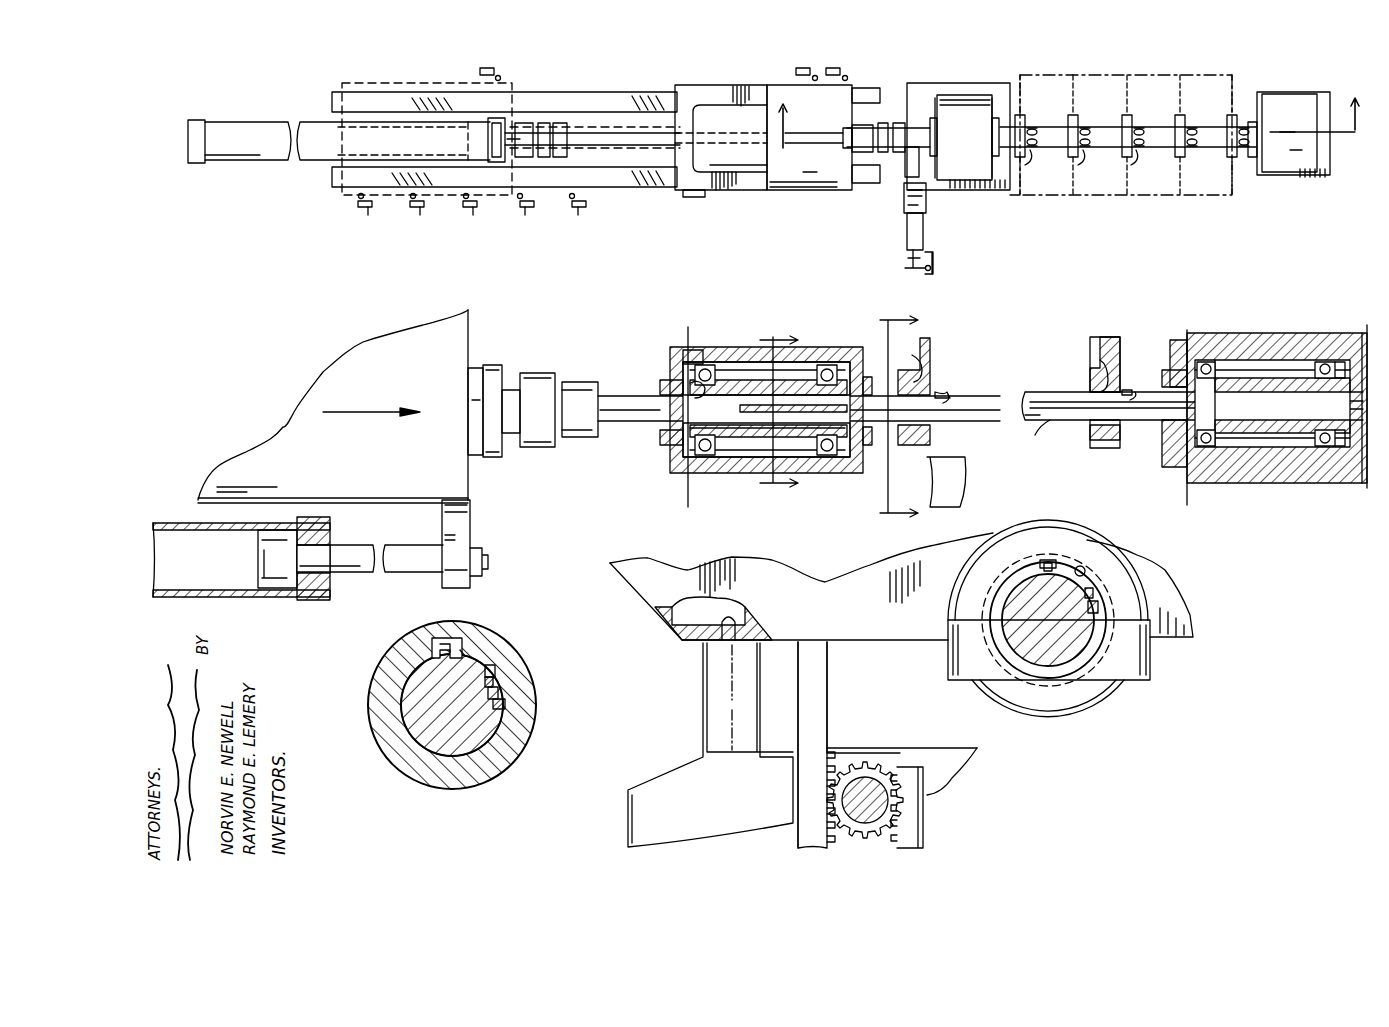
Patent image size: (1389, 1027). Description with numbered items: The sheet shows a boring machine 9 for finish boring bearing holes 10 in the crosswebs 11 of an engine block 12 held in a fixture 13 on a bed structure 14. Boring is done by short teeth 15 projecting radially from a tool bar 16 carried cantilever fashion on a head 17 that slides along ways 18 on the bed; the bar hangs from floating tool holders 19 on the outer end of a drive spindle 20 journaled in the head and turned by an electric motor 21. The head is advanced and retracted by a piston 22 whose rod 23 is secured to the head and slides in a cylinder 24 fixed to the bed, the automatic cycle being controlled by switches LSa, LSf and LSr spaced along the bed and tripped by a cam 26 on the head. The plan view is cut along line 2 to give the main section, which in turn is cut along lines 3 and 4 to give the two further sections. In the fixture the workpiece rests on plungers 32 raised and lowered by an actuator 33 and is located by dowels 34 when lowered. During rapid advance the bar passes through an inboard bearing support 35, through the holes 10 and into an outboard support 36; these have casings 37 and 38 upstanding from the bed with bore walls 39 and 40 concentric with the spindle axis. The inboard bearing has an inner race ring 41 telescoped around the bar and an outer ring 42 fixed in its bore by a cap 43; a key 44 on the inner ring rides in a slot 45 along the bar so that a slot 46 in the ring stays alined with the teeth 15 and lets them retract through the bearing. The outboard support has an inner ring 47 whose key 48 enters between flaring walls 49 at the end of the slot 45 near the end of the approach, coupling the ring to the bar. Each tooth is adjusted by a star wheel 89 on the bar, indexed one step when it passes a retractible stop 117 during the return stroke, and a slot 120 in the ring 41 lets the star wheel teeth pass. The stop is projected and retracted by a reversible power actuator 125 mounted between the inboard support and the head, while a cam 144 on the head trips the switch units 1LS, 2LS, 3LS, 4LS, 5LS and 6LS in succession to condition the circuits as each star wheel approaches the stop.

In FIG. 1, the section line 2— 2 is at (1069, 137).
In FIG. 2, the section line 3— 3 is at (769, 410).
In FIG. 2, the section line 4— 4 is at (885, 418).
In FIG. 1, the boring machine 9 is at (765, 213).
In FIG. 2, the bearing holes 10 is at (933, 365).
In FIG. 4, the bearing holes 10 is at (1080, 575).
In FIG. 1, the crosswebs 11 is at (1070, 115).
In FIG. 2, the crosswebs 11 is at (912, 348).
In FIG. 4, the crosswebs 11 is at (1105, 680).
In FIG. 1, the engine block 12 is at (1123, 70).
In FIG. 2, the engine block 12 is at (1090, 337).
In FIG. 4, the engine block 12 is at (925, 640).
In FIG. 2, the fixture 13 is at (966, 488).
In FIG. 4, the fixture 13 is at (703, 710).
In FIG. 1, the bed structure 14 is at (1022, 195).
In FIG. 1, the cutting teeth 15 is at (1140, 137).
In FIG. 2, the cutting teeth 15 is at (950, 392).
In FIG. 3, the cutting teeth 15 is at (468, 647).
In FIG. 4, the cutting teeth 15 is at (1048, 562).
In FIG. 1, the tool spindle or boring bar 16 is at (607, 130).
In FIG. 2, the tool spindle or boring bar 16 is at (622, 392).
In FIG. 3, the tool spindle or boring bar 16 is at (452, 705).
In FIG. 4, the tool spindle or boring bar 16 is at (1085, 735).
In FIG. 1, the head 17 is at (390, 83).
In FIG. 2, the head 17 is at (330, 375).
In FIG. 1, the ways 18 is at (360, 88).
In FIG. 1, the floating tool holders 19 is at (907, 152).
In FIG. 2, the floating tool holders 19 is at (545, 445).
In FIG. 1, the drive spindle 20 is at (870, 153).
In FIG. 2, the drive spindle 20 is at (505, 455).
In FIG. 1, the electric motor 21 is at (712, 97).
In FIG. 2, the piston 22 is at (277, 529).
In FIG. 1, the piston rod 23 is at (638, 145).
In FIG. 2, the piston rod 23 is at (370, 544).
In FIG. 1, the cylinder 24 is at (257, 128).
In FIG. 2, the cylinder 24 is at (180, 522).
In FIG. 1, the cam 26 is at (505, 85).
In FIG. 4, the plungers 32 is at (826, 707).
In FIG. 4, the actuator 33 is at (875, 752).
In FIG. 4, the dowels 34 is at (732, 620).
In FIG. 1, the inboard bearing support 35 is at (975, 93).
In FIG. 2, the inboard bearing support 35 is at (720, 335).
In FIG. 1, the outboard bearing support 36 is at (1288, 95).
In FIG. 2, the outboard bearing support 36 is at (1218, 328).
In FIG. 2, the inboard casing 37 is at (685, 492).
In FIG. 2, the outboard casing 38 is at (1185, 493).
In FIG. 2, the inboard bore wall 39 is at (837, 450).
In FIG. 2, the outboard bore wall 40 is at (1333, 447).
In FIG. 2, the inner race ring 41 is at (730, 452).
In FIG. 3, the inner race ring 41 is at (390, 675).
In FIG. 2, the outer ring 42 is at (793, 455).
In FIG. 2, the cap 43 is at (680, 455).
In FIG. 2, the key 44 is at (785, 405).
In FIG. 3, the key 44 is at (511, 700).
In FIG. 2, the slot 45 is at (1047, 420).
In FIG. 3, the slot 45 is at (511, 715).
In FIG. 4, the slot 45 is at (1101, 615).
In FIG. 2, the slot 46 is at (690, 382).
In FIG. 3, the slot 46 is at (445, 636).
In FIG. 2, the inner ring 47 is at (1285, 452).
In FIG. 2, the key 48 is at (1215, 382).
In FIG. 2, the flaring walls 49 is at (1308, 363).
In FIG. 1, the star wheel 89 is at (1100, 147).
In FIG. 2, the star wheel 89 is at (953, 392).
In FIG. 3, the star wheel 89 is at (505, 685).
In FIG. 4, the star wheel 89 is at (1092, 597).
In FIG. 1, the retractible stop 117 is at (964, 137).
In FIG. 3, the slot 120 is at (497, 670).
In FIG. 1, the reversible power actuator 125 is at (895, 235).
In FIG. 1, the cam 144 is at (695, 200).
In FIG. 1, the switch unit 1LS is at (370, 218).
In FIG. 1, the switch unit 2LS is at (422, 218).
In FIG. 1, the switch unit 3LS is at (475, 218).
In FIG. 1, the switch unit 4LS is at (528, 218).
In FIG. 1, the switch unit 5LS is at (583, 218).
In FIG. 1, the limit switch 6LS is at (930, 270).
In FIG. 1, the limit switch LSr is at (488, 68).
In FIG. 1, the limit switch LSa is at (802, 68).
In FIG. 1, the limit switch LSf is at (840, 66).